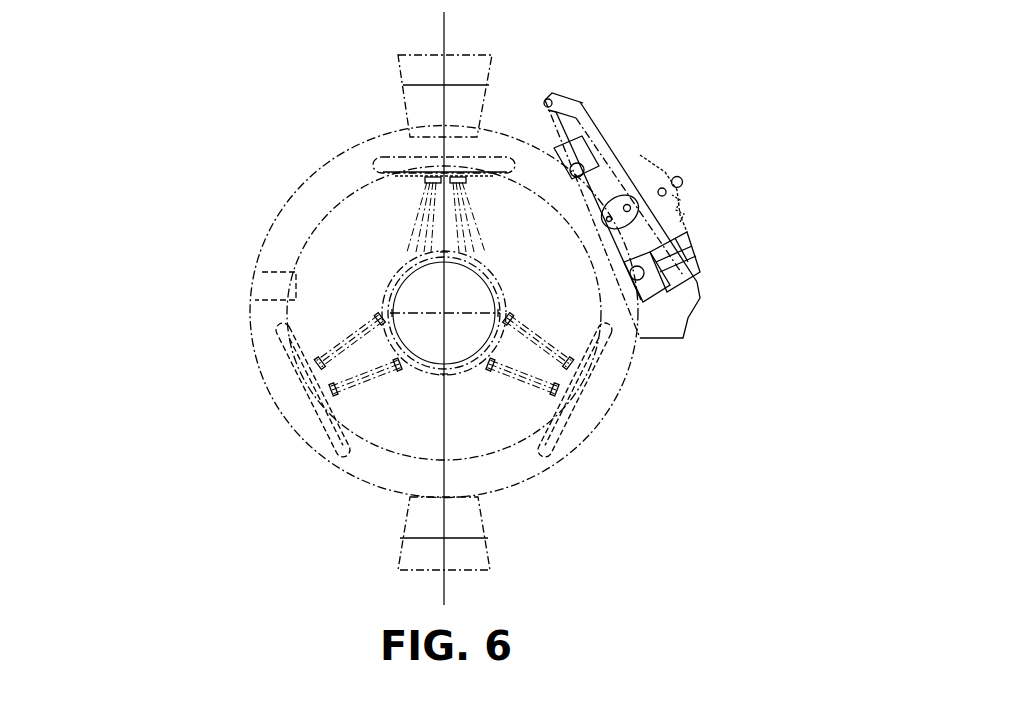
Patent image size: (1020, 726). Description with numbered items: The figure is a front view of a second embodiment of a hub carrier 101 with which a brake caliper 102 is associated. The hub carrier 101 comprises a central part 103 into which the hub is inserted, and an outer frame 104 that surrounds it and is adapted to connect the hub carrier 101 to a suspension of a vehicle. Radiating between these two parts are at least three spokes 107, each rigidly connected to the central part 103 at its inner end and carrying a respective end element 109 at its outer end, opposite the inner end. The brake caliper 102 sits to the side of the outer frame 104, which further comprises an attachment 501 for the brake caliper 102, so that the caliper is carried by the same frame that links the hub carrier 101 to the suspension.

The hub carrier 101 is at (256, 438).
The brake caliper 102 is at (631, 155).
The central part 103 is at (403, 372).
The outer frame 104 is at (337, 162).
The spokes 107 is at (417, 218).
The end elements 109 is at (568, 392).
The attachment 501 is at (645, 298).